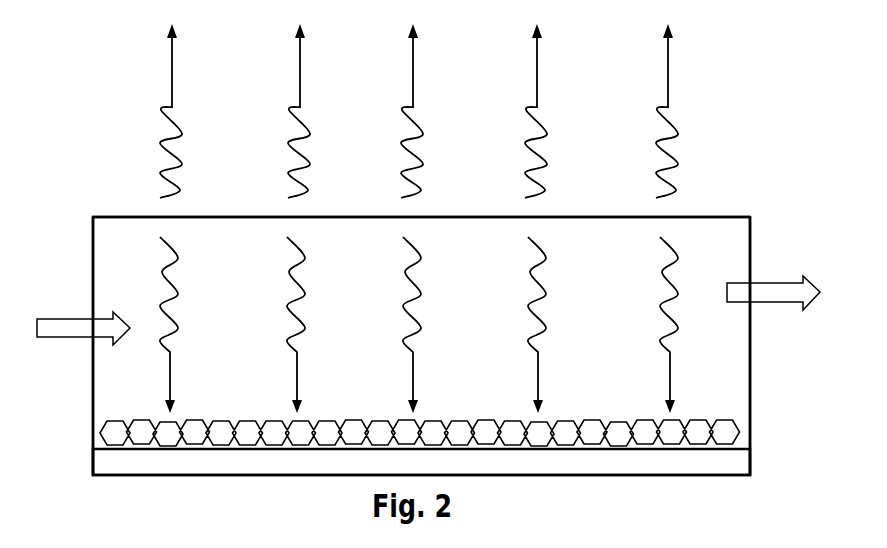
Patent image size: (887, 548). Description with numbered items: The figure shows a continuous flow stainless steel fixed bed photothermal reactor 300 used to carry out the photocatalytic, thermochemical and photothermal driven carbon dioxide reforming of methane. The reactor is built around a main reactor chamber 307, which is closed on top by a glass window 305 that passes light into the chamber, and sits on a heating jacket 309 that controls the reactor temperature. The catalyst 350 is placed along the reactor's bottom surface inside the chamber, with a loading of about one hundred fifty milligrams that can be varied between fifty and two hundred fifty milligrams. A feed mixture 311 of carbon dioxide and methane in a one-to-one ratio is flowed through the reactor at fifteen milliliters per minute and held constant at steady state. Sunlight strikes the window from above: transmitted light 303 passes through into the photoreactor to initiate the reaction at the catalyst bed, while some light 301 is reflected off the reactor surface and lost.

The photothermal reactor 300 is at (786, 206).
The reflected light 301 is at (668, 82).
The transmitted light 303 is at (673, 331).
The glass window 305 is at (143, 217).
The main reactor chamber 307 is at (717, 380).
The heating jacket 309 is at (92, 468).
The feed mixture 311 is at (78, 330).
The catalyst 350 is at (264, 432).